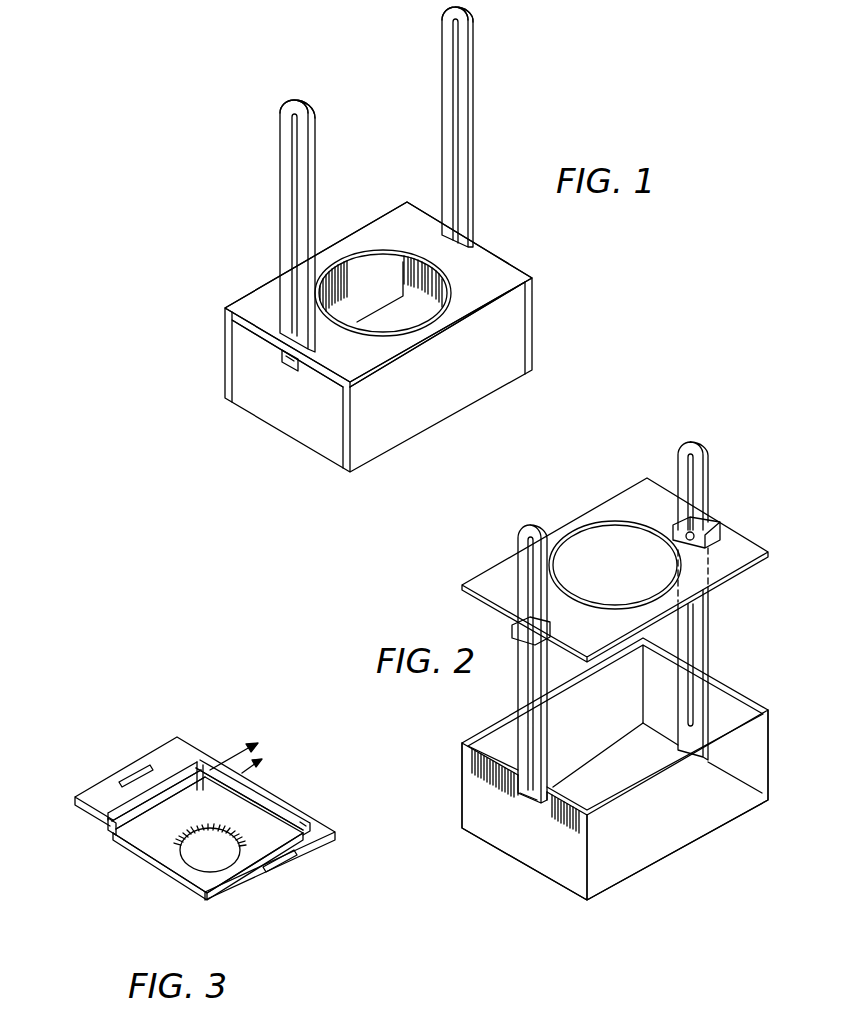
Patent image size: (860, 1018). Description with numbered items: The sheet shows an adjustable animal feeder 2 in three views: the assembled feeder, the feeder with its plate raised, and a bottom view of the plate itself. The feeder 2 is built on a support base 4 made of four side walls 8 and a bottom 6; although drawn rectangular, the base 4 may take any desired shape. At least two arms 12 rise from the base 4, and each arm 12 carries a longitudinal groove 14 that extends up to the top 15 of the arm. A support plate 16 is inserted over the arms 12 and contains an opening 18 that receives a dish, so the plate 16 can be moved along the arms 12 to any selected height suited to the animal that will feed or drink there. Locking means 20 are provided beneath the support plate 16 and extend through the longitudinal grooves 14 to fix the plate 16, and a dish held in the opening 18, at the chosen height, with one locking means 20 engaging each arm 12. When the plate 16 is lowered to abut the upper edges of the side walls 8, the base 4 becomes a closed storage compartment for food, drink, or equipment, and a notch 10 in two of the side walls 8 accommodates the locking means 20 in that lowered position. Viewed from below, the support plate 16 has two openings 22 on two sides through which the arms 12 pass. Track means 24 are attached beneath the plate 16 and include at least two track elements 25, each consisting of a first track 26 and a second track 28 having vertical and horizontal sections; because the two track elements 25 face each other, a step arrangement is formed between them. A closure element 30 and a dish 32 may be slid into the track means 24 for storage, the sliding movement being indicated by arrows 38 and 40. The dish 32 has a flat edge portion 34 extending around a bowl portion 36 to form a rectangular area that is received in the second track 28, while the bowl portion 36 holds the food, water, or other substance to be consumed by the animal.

In FIG. 1, the adjustable animal feeder 2 is at (215, 271).
In FIG. 2, the adjustable animal feeder 2 is at (506, 875).
In FIG. 1, the support base 4 is at (538, 339).
In FIG. 2, the support base 4 is at (772, 758).
In FIG. 2, the bottom 6 is at (640, 765).
In FIG. 2, the side walls 8 is at (590, 708).
In FIG. 2, the notch 10 is at (520, 790).
In FIG. 1, the arms 12 is at (302, 155).
In FIG. 2, the arms 12 is at (522, 668).
In FIG. 1, the longitudinal grooves 14 is at (296, 177).
In FIG. 2, the longitudinal grooves 14 is at (610, 622).
In FIG. 1, the top 15 is at (290, 102).
In FIG. 1, the support plate 16 is at (490, 280).
In FIG. 2, the support plate 16 is at (483, 580).
In FIG. 3, the support plate 16 is at (170, 755).
In FIG. 1, the opening 18 is at (367, 275).
In FIG. 2, the opening 18 is at (595, 545).
In FIG. 2, the locking means 20 is at (718, 528).
In FIG. 3, the openings 22 is at (130, 784).
In FIG. 3, the track means 24 is at (108, 852).
In FIG. 3, the track elements 25 is at (108, 848).
In FIG. 3, the first track 26 is at (113, 830).
In FIG. 3, the second track 28 is at (118, 838).
In FIG. 3, the closure element 30 is at (295, 808).
In FIG. 3, the dish 32 is at (248, 785).
In FIG. 3, the flat edge portion 34 is at (160, 845).
In FIG. 3, the bowl portion 36 is at (200, 860).
In FIG. 3, the arrow 38 is at (230, 752).
In FIG. 3, the arrow 40 is at (255, 762).